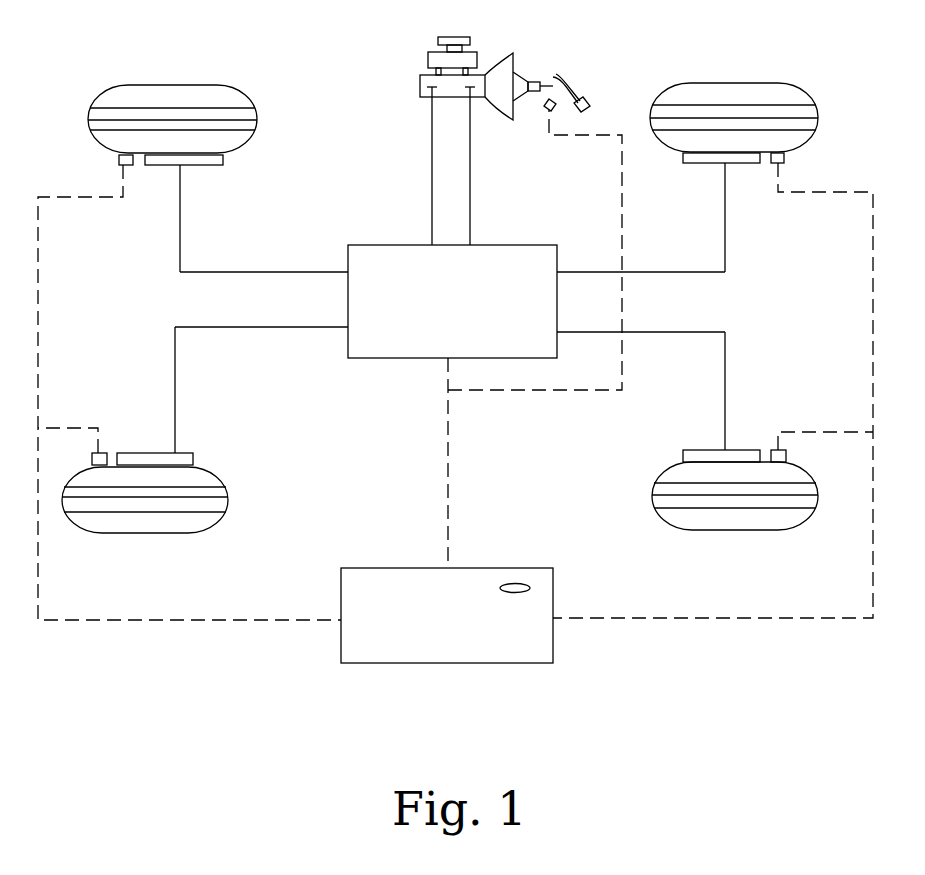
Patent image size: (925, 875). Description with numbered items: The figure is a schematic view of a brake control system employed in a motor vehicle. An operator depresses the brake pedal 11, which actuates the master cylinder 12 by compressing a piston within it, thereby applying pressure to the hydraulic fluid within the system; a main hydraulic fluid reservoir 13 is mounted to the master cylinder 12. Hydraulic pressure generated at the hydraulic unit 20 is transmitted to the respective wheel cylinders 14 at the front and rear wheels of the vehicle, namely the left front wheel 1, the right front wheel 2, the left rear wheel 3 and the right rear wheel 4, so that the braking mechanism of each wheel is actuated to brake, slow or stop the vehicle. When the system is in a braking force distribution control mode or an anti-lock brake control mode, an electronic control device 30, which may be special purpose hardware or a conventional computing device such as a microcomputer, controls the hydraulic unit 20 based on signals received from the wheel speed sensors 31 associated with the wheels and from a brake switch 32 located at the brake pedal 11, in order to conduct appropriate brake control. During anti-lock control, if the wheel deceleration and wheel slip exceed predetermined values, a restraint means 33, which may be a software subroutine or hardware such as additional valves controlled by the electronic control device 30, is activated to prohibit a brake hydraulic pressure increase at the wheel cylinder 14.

The left front wheel 1 is at (150, 533).
The right front wheel 2 is at (182, 84).
The left rear wheel 3 is at (720, 530).
The right rear wheel 4 is at (740, 83).
The brake pedal 11 is at (556, 78).
The master cylinder 12 is at (420, 85).
The main hydraulic fluid reservoir 13 is at (428, 62).
The wheel cylinders 14 is at (210, 165).
The hydraulic unit 20 is at (388, 358).
The electronic control device 30 is at (553, 595).
The wheel speed sensors 31 is at (133, 165).
The brake switch 32 is at (547, 108).
The restraint means 33 is at (507, 592).